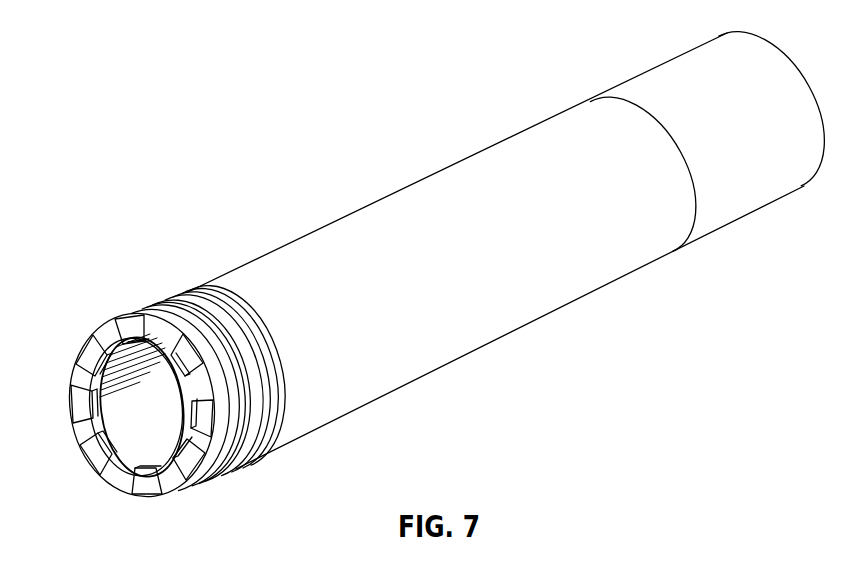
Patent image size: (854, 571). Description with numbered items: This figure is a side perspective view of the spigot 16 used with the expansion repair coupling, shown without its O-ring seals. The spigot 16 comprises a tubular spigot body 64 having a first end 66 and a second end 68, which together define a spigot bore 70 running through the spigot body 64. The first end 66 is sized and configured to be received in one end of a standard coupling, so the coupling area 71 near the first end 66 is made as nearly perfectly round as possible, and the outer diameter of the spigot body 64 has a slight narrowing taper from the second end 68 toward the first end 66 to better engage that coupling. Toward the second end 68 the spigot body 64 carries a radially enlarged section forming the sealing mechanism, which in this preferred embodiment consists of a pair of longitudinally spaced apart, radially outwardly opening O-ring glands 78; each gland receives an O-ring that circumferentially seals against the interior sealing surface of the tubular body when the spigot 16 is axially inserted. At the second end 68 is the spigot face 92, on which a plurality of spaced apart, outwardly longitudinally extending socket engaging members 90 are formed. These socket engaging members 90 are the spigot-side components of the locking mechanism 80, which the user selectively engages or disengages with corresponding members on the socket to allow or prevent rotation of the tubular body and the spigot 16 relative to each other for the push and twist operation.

The spigot 16 is at (363, 163).
The spigot body 64 is at (452, 317).
The first end 66 is at (807, 197).
The second end 68 is at (172, 502).
The spigot bore 70 is at (157, 407).
The coupling area 71 is at (703, 95).
The O-ring glands 78 is at (219, 418).
The locking mechanism 80 is at (112, 323).
The socket engaging members 90 is at (92, 342).
The spigot face 92 is at (75, 368).